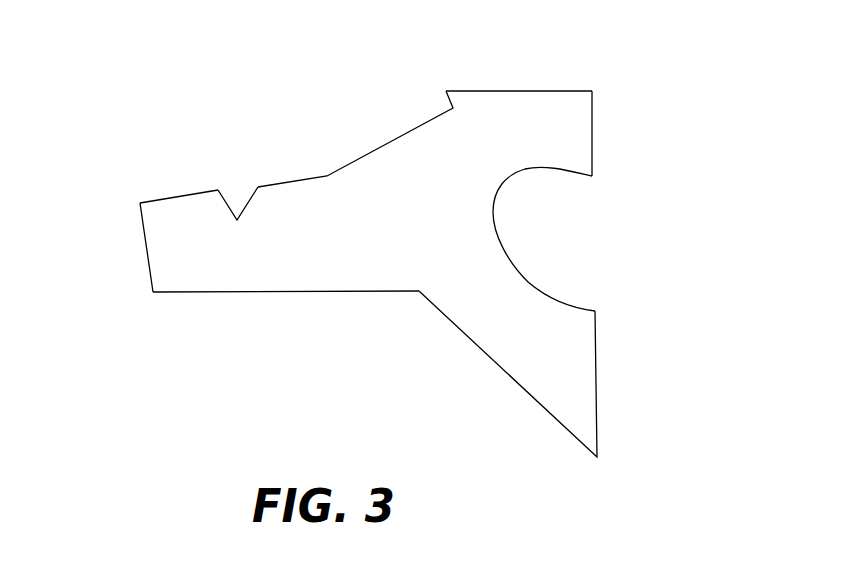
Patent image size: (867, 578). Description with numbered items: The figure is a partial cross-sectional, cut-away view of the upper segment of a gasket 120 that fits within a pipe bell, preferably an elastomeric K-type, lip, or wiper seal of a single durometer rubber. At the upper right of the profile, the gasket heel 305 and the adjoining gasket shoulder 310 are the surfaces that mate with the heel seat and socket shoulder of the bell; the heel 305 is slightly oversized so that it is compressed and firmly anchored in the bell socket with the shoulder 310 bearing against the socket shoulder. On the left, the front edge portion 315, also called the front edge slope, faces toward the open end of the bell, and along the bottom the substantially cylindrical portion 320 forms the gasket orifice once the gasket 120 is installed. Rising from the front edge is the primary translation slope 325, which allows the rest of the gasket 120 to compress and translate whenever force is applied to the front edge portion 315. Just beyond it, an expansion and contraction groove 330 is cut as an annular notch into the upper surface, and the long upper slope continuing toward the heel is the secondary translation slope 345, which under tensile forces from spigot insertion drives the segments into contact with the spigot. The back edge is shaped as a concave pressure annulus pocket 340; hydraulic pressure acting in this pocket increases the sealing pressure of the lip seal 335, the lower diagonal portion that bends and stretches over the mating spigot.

The gasket 120 is at (336, 242).
The gasket heel 305 is at (503, 90).
The gasket shoulder 310 is at (592, 133).
The front edge portion 315 is at (147, 253).
The substantially cylindrical portion 320 is at (232, 292).
The primary translation slope 325 is at (178, 195).
The expansion and contraction groove 330 is at (237, 218).
The lip seal 335 is at (528, 387).
The pressure annulus pocket 340 is at (500, 233).
The secondary translation slope 345 is at (383, 145).